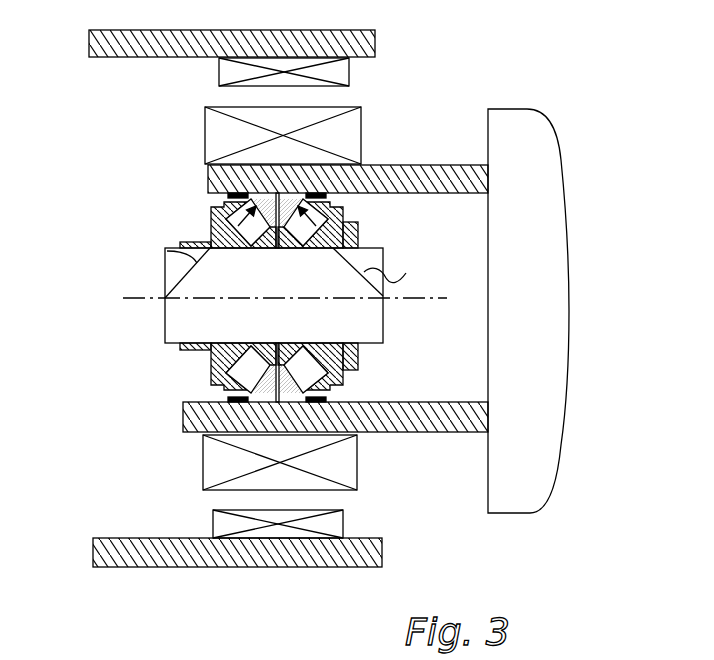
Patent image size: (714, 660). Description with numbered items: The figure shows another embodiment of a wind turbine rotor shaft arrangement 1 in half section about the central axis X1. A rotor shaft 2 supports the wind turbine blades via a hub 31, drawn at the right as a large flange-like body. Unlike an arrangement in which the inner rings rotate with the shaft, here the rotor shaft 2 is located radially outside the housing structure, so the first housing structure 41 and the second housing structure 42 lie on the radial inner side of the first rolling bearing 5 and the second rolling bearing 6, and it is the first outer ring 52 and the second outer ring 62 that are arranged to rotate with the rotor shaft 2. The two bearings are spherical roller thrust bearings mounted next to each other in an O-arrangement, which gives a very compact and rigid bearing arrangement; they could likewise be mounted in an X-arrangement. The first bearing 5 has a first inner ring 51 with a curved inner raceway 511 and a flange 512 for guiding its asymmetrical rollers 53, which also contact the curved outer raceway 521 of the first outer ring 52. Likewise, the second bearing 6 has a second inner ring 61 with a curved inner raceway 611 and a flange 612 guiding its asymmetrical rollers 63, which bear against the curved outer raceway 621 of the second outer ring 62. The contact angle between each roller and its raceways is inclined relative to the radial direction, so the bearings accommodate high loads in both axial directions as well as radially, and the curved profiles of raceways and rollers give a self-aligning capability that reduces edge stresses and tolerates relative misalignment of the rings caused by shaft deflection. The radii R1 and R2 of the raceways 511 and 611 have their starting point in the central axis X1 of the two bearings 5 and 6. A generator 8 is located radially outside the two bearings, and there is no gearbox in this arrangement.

The wind turbine rotor shaft arrangement 1 is at (539, 270).
The rotor shaft 2 is at (462, 166).
The hub 31 is at (567, 304).
The first housing structure 41 is at (209, 295).
The second housing structure 42 is at (165, 327).
The first rolling bearing 5 is at (360, 310).
The first inner ring 51 is at (307, 214).
The inner raceway 511 is at (299, 206).
The flange 512 is at (331, 208).
The first outer ring 52 is at (360, 337).
The outer raceway 521 is at (318, 376).
The rollers 53 is at (300, 403).
The second rolling bearing 6 is at (188, 316).
The second inner ring 61 is at (212, 364).
The inner raceway 611 is at (211, 218).
The flange 612 is at (212, 373).
The second outer ring 62 is at (195, 347).
The outer raceway 621 is at (240, 397).
The rollers 63 is at (262, 399).
The generator 8 is at (203, 126).
The radius R1 is at (396, 266).
The radius R2 is at (165, 248).
The central axis X1 is at (133, 298).